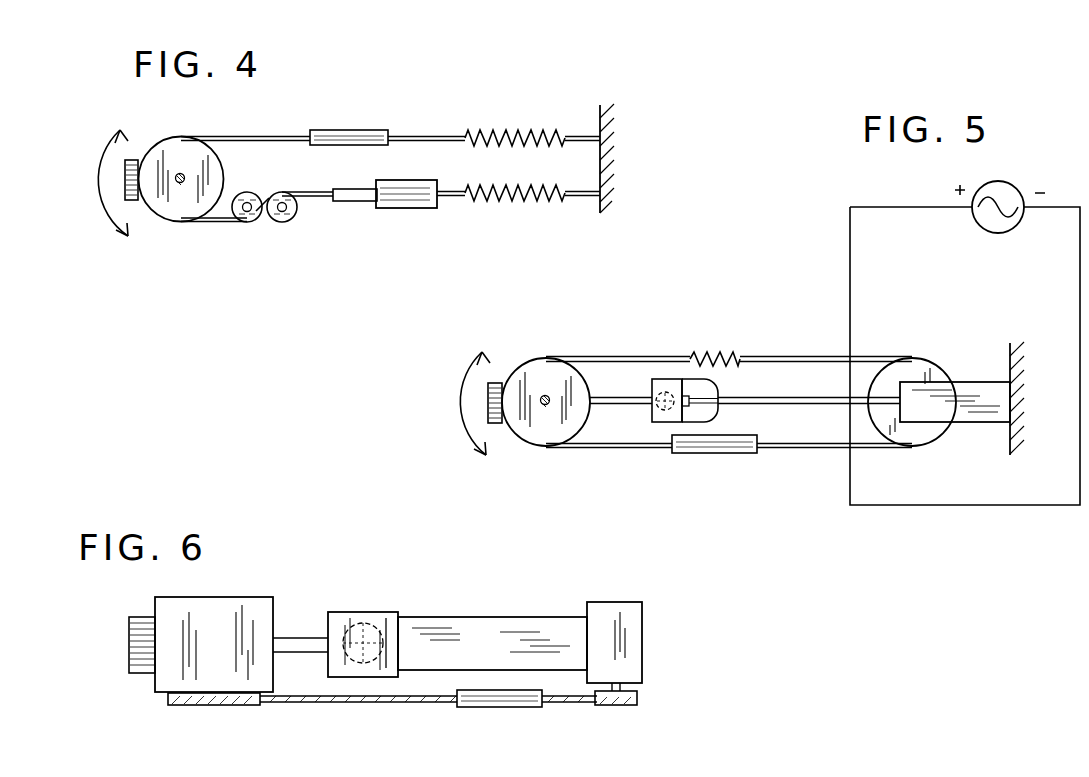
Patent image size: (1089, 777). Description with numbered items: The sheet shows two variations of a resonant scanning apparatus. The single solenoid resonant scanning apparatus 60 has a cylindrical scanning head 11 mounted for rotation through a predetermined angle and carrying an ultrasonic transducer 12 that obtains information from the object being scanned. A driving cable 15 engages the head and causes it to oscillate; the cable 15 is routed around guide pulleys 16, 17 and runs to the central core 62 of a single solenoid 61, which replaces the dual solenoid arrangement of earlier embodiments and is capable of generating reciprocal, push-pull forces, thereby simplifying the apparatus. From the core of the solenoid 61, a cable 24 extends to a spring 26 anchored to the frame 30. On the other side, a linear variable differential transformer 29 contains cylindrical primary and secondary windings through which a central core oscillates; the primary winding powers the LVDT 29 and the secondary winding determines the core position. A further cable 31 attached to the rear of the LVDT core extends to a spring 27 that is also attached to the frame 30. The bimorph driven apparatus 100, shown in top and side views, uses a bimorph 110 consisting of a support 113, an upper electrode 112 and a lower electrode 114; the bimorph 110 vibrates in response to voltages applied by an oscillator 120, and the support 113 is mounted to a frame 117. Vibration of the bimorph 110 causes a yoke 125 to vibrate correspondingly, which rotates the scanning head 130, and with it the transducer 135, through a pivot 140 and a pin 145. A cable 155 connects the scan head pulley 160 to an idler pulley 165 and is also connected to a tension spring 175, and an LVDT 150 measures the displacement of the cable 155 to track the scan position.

In FIG. 4, the scanning head 11 is at (202, 169).
In FIG. 4, the ultrasonic transducer 12 is at (137, 160).
In FIG. 4, the driving cable 15 is at (246, 130).
In FIG. 4, the guide pulley 16 is at (280, 222).
In FIG. 4, the guide pulley 17 is at (246, 222).
In FIG. 4, the cable 24 is at (457, 196).
In FIG. 4, the spring 26 is at (531, 201).
In FIG. 4, the spring 27 is at (540, 131).
In FIG. 4, the linear variable differential transformer 29 is at (346, 130).
In FIG. 4, the frame 30 is at (642, 166).
In FIG. 4, the cable 31 is at (435, 135).
In FIG. 4, the drive arrangement 60 is at (318, 108).
In FIG. 4, the single solenoid 61 is at (406, 208).
In FIG. 4, the central core 62 is at (351, 202).
In FIG. 5, the apparatus 100 is at (779, 338).
In FIG. 6, the apparatus 100 is at (672, 672).
In FIG. 5, the bimorph 110 is at (748, 376).
In FIG. 6, the bimorph 110 is at (508, 606).
In FIG. 5, the upper electrode 112 is at (828, 398).
In FIG. 5, the support 113 is at (988, 394).
In FIG. 6, the support 113 is at (625, 632).
In FIG. 5, the lower electrode 114 is at (828, 406).
In FIG. 6, the lower electrode 114 is at (500, 657).
In FIG. 5, the frame 117 is at (1016, 410).
In FIG. 5, the oscillator 120 is at (993, 184).
In FIG. 5, the yoke 125 is at (674, 380).
In FIG. 6, the yoke 125 is at (390, 614).
In FIG. 5, the scanning head 130 is at (562, 386).
In FIG. 6, the scanning head 130 is at (228, 637).
In FIG. 5, the transducer 135 is at (535, 441).
In FIG. 6, the transducer 135 is at (138, 616).
In FIG. 5, the pivot 140 is at (660, 403).
In FIG. 6, the pivot 140 is at (357, 612).
In FIG. 5, the pin 145 is at (632, 398).
In FIG. 6, the pin 145 is at (296, 636).
In FIG. 5, the LVDT 150 is at (712, 456).
In FIG. 6, the LVDT 150 is at (516, 707).
In FIG. 5, the cable 155 is at (818, 448).
In FIG. 6, the cable 155 is at (403, 704).
In FIG. 6, the scan head pulley 160 is at (220, 708).
In FIG. 5, the idler pulley 165 is at (918, 446).
In FIG. 6, the idler pulley 165 is at (637, 706).
In FIG. 5, the tension spring 175 is at (712, 352).